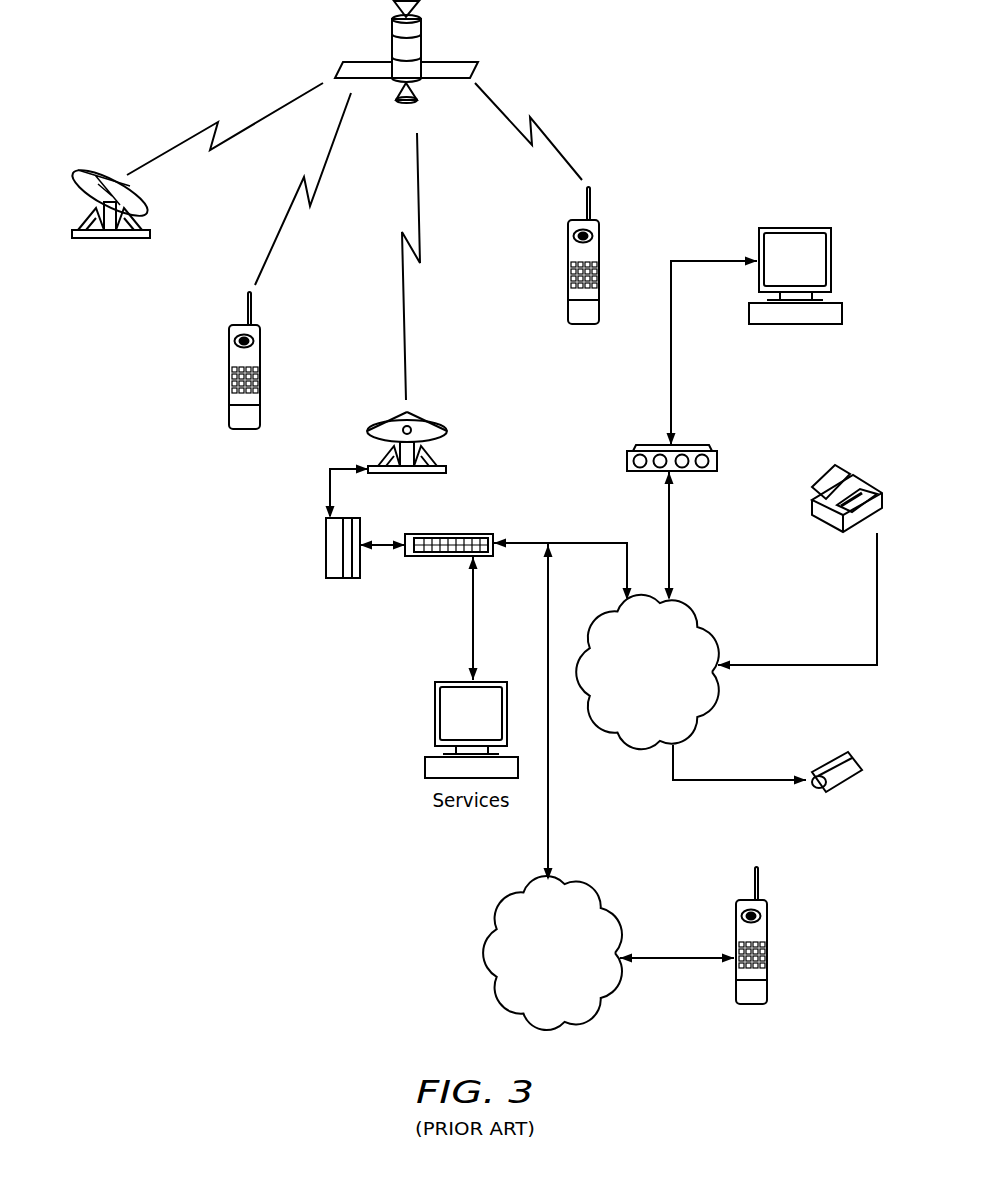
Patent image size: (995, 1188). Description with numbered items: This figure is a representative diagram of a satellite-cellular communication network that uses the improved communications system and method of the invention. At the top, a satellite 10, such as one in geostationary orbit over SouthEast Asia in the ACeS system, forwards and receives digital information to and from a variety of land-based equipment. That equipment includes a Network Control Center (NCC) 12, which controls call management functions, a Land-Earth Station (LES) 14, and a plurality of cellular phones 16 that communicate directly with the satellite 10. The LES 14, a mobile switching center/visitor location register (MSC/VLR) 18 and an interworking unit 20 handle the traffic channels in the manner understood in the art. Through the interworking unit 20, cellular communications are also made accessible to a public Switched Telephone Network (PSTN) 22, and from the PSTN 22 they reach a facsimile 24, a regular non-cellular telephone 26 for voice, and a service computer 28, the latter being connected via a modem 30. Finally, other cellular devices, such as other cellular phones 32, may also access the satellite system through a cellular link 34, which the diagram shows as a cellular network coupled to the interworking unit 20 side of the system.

The satellite 10 is at (390, 40).
The Network Control Center (NCC) 12 is at (87, 200).
The Land-Earth Station (LES) 14 is at (448, 426).
The cellular phone 16 is at (261, 350).
The mobile switching center/visitor location register (MSC/VLR) 18 is at (361, 528).
The interworking unit 20 is at (467, 533).
The public Switched Telephone Network (PSTN) 22 is at (647, 672).
The facsimile 24 is at (853, 477).
The regular non-cellular telephone 26 is at (843, 762).
The service computer 28 is at (805, 228).
The modem 30 is at (713, 446).
The cellular phone 32 is at (767, 922).
The cellular link 34 is at (552, 953).